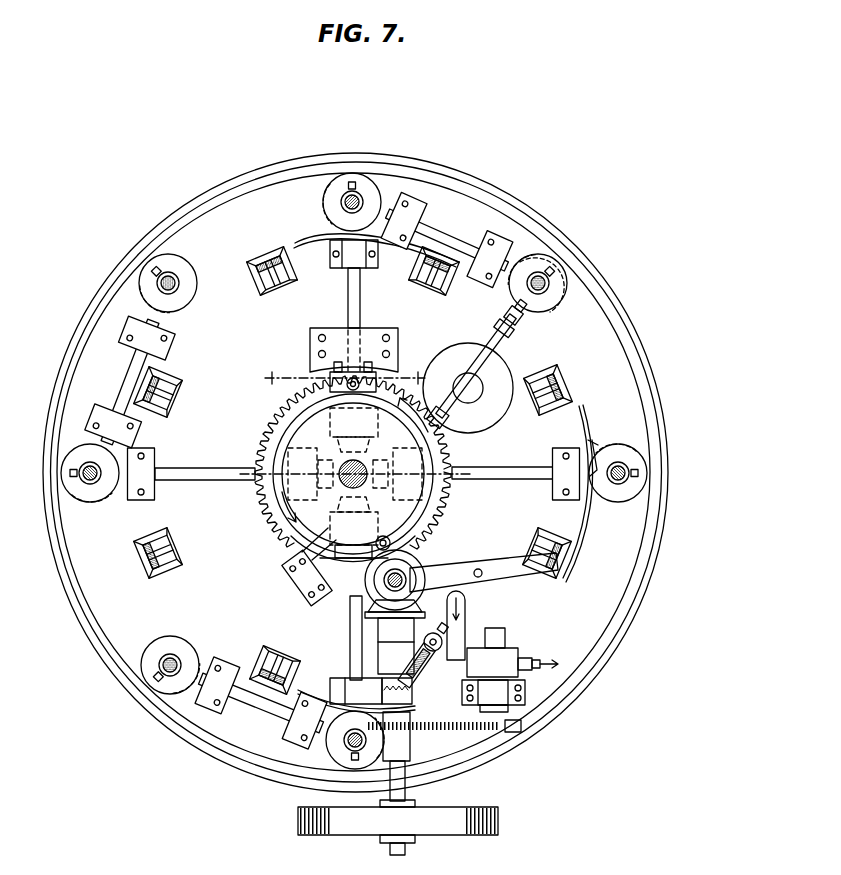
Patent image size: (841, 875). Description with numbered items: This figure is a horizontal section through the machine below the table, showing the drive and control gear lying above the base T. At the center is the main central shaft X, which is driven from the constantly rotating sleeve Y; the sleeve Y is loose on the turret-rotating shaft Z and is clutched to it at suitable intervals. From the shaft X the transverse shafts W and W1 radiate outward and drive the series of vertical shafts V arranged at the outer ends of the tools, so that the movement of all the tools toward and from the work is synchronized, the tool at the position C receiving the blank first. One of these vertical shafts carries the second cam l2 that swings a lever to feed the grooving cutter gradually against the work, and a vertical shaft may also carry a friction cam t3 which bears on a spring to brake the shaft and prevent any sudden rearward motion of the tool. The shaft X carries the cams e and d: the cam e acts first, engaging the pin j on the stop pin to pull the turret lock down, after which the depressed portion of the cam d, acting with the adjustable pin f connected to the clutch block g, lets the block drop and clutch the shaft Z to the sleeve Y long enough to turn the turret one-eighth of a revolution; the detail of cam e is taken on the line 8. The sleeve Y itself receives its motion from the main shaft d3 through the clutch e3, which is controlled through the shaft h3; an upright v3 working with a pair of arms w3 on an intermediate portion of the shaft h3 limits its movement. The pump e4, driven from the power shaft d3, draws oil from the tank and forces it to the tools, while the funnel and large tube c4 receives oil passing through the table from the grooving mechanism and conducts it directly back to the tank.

The vertical shaft V is at (92, 484).
The second cam l2 is at (538, 283).
The friction cam t3 is at (586, 500).
The transverse shaft W is at (372, 292).
The transverse shaft W1 is at (436, 240).
The upright v3 is at (258, 292).
The funnel and large tube c4 is at (502, 360).
The cam e is at (436, 420).
The pin j is at (335, 415).
The main central shaft X is at (365, 465).
The section line 8 is at (355, 421).
The tool C is at (335, 402).
The adjustable pin f is at (392, 547).
The cam d is at (290, 560).
The turret-rotating shaft Z is at (372, 592).
The base T is at (484, 551).
The sleeve Y is at (405, 599).
The clutch block g is at (350, 624).
The arms w3 is at (602, 410).
The shaft h3 is at (460, 640).
The pump e4 is at (510, 670).
The clutch e3 is at (345, 670).
The main shaft d3 is at (405, 792).